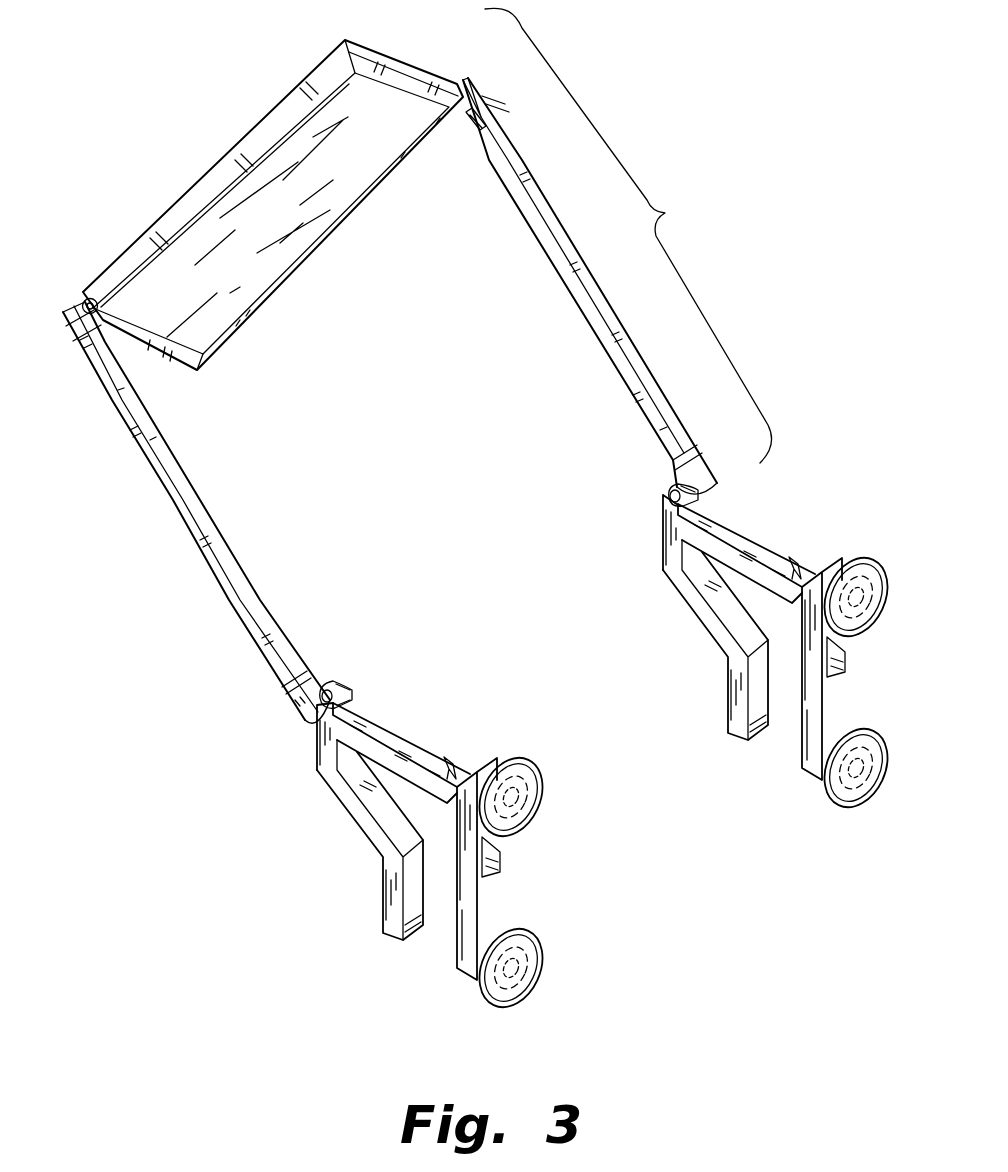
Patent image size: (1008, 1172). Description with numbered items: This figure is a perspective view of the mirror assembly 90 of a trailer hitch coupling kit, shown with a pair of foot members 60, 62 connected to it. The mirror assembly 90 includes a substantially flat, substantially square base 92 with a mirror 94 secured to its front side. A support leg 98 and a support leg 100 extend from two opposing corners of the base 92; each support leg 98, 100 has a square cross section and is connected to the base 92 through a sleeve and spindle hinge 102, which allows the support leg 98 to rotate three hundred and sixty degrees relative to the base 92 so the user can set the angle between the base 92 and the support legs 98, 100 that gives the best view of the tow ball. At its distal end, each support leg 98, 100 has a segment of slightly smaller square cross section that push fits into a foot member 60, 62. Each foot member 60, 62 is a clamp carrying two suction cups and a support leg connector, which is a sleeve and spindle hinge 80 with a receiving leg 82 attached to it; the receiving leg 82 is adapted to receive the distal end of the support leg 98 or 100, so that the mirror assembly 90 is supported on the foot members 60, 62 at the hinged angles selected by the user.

The foot member 60 is at (373, 837).
The foot member 62 is at (770, 552).
The sleeve and spindle hinge 80 is at (322, 688).
The receiving leg 82 is at (287, 700).
The mirror assembly 90 is at (628, 235).
The base 92 is at (292, 100).
The mirror 94 is at (355, 187).
The support leg 98 is at (158, 455).
The support leg 100 is at (603, 313).
The sleeve and spindle hinge 102 is at (86, 299).